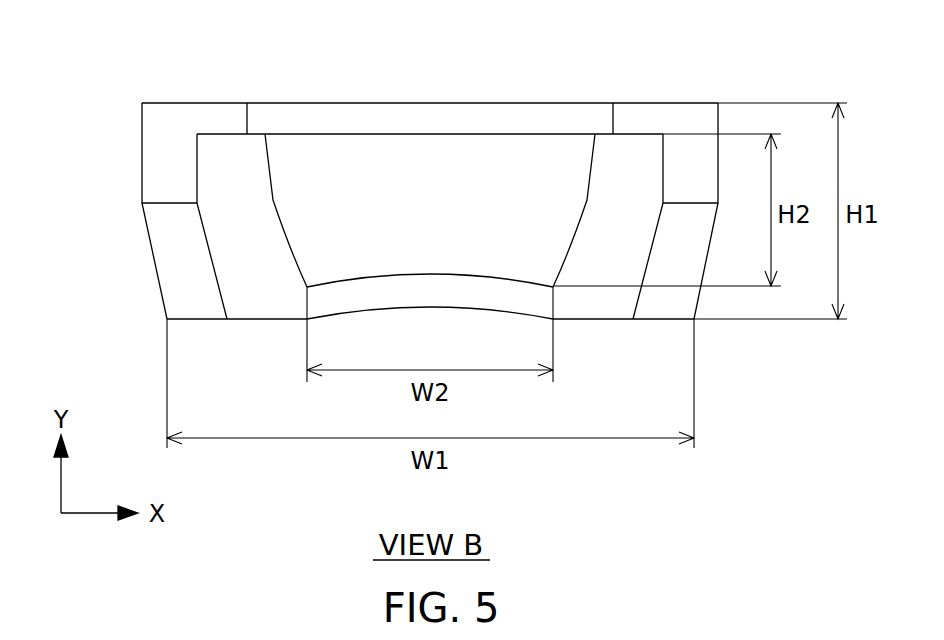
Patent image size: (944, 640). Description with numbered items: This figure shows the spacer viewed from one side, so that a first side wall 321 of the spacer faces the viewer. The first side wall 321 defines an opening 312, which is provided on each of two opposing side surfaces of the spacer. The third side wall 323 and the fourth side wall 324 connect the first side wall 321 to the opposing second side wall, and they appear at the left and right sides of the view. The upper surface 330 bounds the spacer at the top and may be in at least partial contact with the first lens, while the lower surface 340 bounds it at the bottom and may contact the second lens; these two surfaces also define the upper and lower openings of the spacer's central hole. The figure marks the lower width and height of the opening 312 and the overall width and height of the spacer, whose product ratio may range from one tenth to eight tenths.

The upper surface 330 is at (220, 103).
The opening 312 is at (450, 171).
The first side wall 321 is at (627, 147).
The fourth side wall 324 is at (703, 165).
The third side wall 323 is at (148, 173).
The lower surface 340 is at (253, 320).